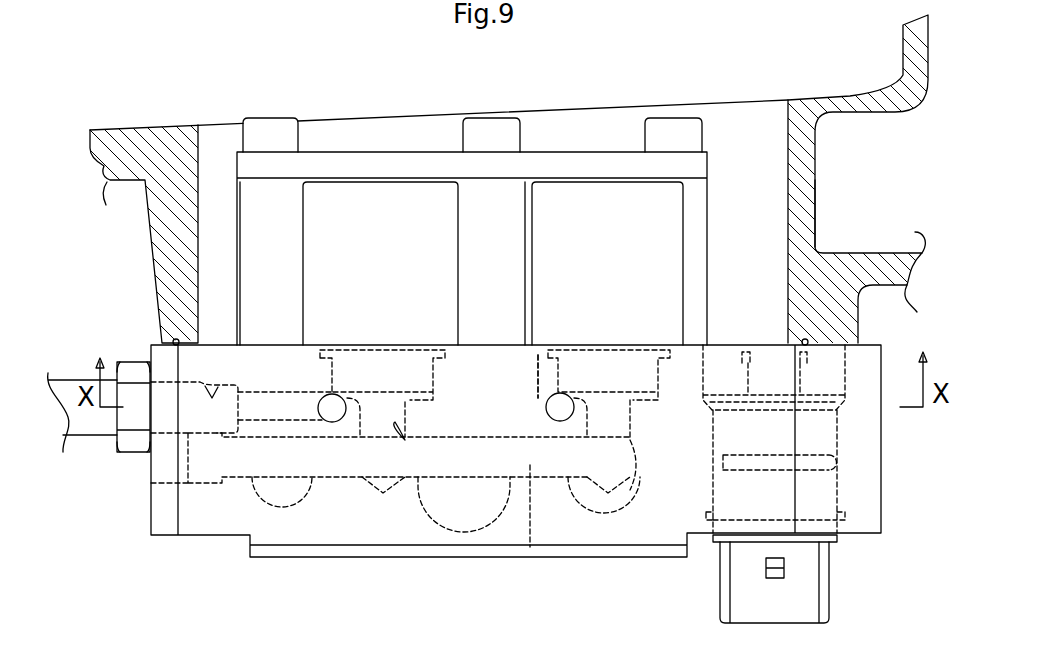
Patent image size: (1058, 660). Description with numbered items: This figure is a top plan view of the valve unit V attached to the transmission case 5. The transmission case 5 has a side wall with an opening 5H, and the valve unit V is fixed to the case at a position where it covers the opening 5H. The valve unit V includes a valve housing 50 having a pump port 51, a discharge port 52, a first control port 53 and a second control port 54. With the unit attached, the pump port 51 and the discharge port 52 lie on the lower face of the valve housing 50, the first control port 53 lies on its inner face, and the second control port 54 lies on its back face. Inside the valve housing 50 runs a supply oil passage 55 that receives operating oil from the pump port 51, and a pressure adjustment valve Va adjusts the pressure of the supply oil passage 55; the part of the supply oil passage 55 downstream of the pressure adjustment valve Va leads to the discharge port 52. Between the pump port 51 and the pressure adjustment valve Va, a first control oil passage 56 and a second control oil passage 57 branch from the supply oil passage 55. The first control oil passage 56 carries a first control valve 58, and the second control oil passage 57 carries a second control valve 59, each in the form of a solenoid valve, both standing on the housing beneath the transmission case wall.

The transmission case 5 is at (122, 132).
The opening 5H is at (787, 203).
The second control valve 59 is at (326, 268).
The first control valve 58 is at (668, 265).
The second control port 54 is at (215, 387).
The second control oil passage 57 is at (325, 400).
The first control port 53 is at (548, 367).
The first control oil passage 56 is at (548, 412).
The discharge port 52 is at (288, 495).
The valve housing 50 is at (405, 528).
The pressure adjustment valve Va is at (462, 523).
The supply oil passage 55 is at (530, 547).
The pump port 51 is at (598, 510).
The valve unit V is at (165, 540).